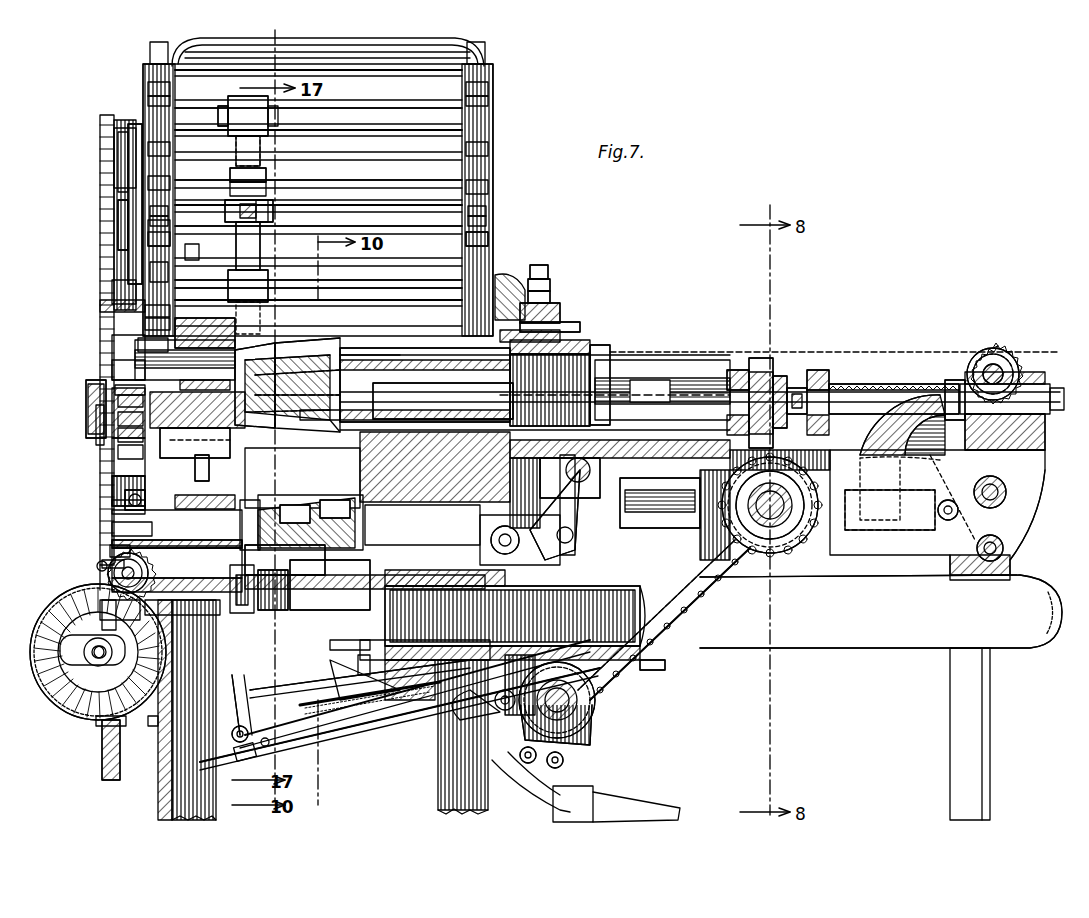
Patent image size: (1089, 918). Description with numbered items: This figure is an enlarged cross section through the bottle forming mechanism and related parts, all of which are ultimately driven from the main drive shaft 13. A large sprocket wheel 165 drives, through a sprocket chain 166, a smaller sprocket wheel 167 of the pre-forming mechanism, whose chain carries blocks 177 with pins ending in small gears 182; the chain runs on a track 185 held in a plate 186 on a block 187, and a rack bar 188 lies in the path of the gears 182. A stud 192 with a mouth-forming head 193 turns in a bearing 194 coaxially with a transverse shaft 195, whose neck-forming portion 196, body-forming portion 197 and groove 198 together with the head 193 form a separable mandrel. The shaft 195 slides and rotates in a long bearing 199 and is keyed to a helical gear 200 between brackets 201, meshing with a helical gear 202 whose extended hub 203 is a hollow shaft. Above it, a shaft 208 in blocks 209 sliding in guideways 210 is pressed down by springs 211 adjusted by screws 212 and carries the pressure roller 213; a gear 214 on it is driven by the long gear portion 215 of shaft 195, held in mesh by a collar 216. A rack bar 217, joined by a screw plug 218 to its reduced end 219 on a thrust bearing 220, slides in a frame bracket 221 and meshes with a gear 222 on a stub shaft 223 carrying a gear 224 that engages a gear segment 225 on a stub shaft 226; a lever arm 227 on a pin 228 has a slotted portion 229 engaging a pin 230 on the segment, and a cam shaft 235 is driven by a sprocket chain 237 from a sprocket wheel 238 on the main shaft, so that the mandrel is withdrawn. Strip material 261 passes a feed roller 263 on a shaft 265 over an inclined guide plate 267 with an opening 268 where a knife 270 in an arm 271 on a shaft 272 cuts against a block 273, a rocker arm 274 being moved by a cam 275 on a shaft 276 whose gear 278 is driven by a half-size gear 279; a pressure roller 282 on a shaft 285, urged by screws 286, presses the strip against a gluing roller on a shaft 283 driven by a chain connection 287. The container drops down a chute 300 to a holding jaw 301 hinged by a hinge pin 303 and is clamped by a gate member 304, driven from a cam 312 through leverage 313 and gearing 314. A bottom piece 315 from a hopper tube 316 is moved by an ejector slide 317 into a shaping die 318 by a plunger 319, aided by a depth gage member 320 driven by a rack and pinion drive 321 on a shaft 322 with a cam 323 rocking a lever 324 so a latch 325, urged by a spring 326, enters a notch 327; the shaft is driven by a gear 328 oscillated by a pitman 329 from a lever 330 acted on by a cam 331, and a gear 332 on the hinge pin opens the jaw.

The main drive shaft 13 is at (585, 712).
The large sprocket wheel 165 is at (102, 762).
The sprocket chain 166 is at (112, 485).
The smaller sprocket wheel 167 is at (88, 412).
The block 177 is at (114, 370).
The small gear 182 is at (116, 388).
The guide member or track 185 is at (118, 420).
The plate 186 is at (118, 436).
The block 187 is at (118, 452).
The rack bar 188 is at (118, 402).
The transverse stud 192 is at (220, 436).
The mouth-forming head 193 is at (250, 430).
The bearing 194 is at (205, 458).
The transverse shaft 195 is at (338, 425).
The neck-forming portion 196 is at (258, 418).
The body-forming portion 197 is at (316, 430).
The groove 198 is at (312, 428).
The long transverse bearing 199 is at (448, 418).
The helical gear 200 is at (778, 360).
The brackets 201 is at (738, 370).
The helical gear 202 is at (800, 530).
The extended hub 203 is at (880, 490).
The shaft 208 is at (415, 348).
The blocks 209 is at (140, 345).
The guideways 210 is at (145, 325).
The compression springs 211 is at (145, 312).
The screws 212 is at (150, 272).
The pressure roller 213 is at (300, 360).
The gear 214 is at (570, 338).
The long gear portion 215 is at (565, 395).
The collar 216 is at (598, 372).
The rack bar 217 is at (920, 386).
The screw plug 218 is at (838, 390).
The reduced end 219 is at (808, 392).
The thrust bearing 220 is at (800, 378).
The frame bracket 221 is at (1030, 390).
The gear 222 is at (1010, 360).
The stub shaft 223 is at (996, 372).
The gear 224 is at (996, 350).
The gear segment 225 is at (960, 382).
The stub shaft 226 is at (1008, 492).
The lever arm 227 is at (1018, 518).
The pin 228 is at (1005, 548).
The slotted portion 229 is at (905, 446).
The pin 230 is at (942, 470).
The shaft 235 is at (790, 540).
The sprocket chain 237 is at (650, 660).
The sprocket wheel 238 is at (610, 700).
The strip material 261 is at (245, 90).
The feed roller 263 is at (252, 107).
The shaft 265 is at (414, 148).
The inclined guide plate 267 is at (265, 165).
The opening 268 is at (262, 230).
The knife 270 is at (268, 210).
The arm 271 is at (265, 180).
The shaft 272 is at (360, 188).
The edge or block 273 is at (268, 220).
The rocker arm 274 is at (130, 189).
The cam 275 is at (196, 252).
The shaft 276 is at (408, 236).
The gear 278 is at (119, 240).
The half-size gear 279 is at (118, 160).
The pressure roller 282 is at (272, 290).
The transverse shaft 283 is at (420, 300).
The transverse shaft 285 is at (378, 290).
The adjustable screws 286 is at (150, 228).
The chain and sprocket connection 287 is at (112, 290).
The chute 300 is at (520, 480).
The holding jaw 301 is at (520, 540).
The hinge pin 303 is at (330, 580).
The gate member 304 is at (300, 515).
The cam 312 is at (580, 752).
The leverage 313 is at (244, 726).
The gearing 314 is at (248, 680).
The bottom piece 315 is at (625, 614).
The hopper tube 316 is at (718, 640).
The ejector slide 317 is at (360, 625).
The shaping die 318 is at (336, 510).
The plunger 319 is at (600, 490).
The depth gage member 320 is at (262, 548).
The rack and pinion drive 321 is at (110, 550).
The shaft 322 is at (110, 576).
The cam 323 is at (100, 565).
The lever 324 is at (112, 506).
The latch 325 is at (112, 528).
The spring 326 is at (150, 495).
The notch 327 is at (160, 540).
The gear 328 is at (90, 712).
The pitman 329 is at (335, 745).
The lever 330 is at (590, 660).
The cam 331 is at (590, 735).
The gear 332 is at (280, 580).